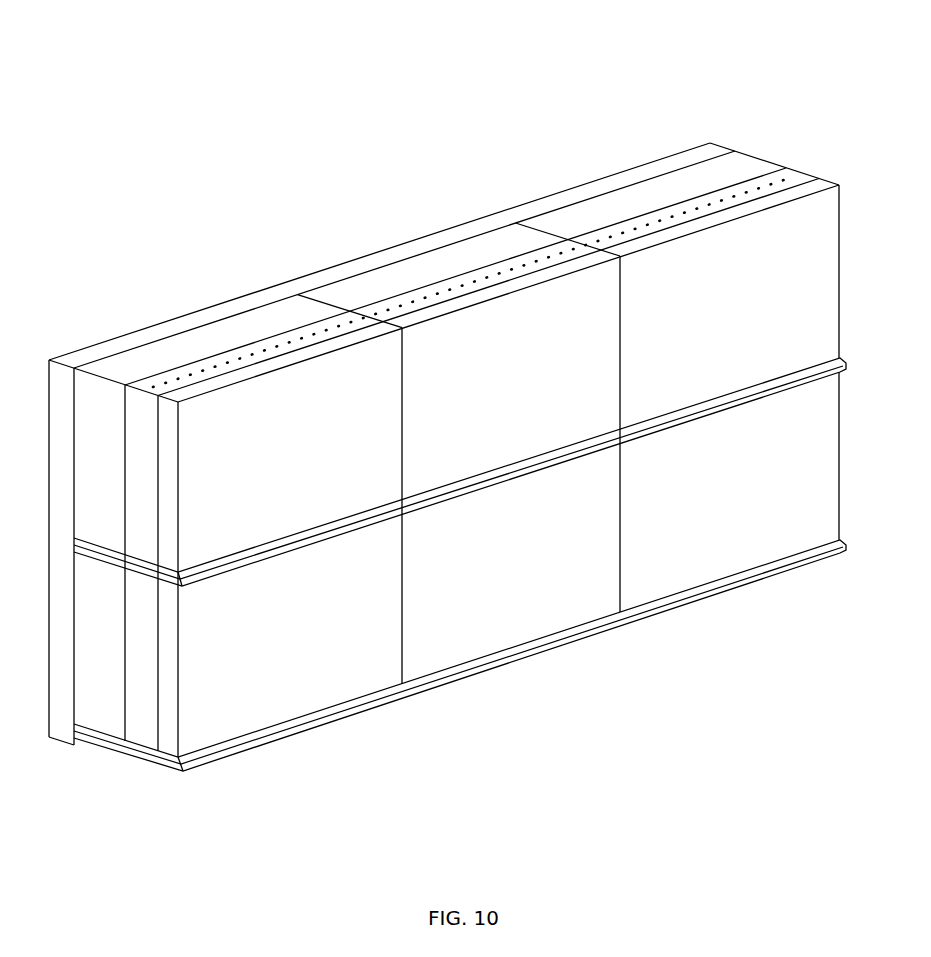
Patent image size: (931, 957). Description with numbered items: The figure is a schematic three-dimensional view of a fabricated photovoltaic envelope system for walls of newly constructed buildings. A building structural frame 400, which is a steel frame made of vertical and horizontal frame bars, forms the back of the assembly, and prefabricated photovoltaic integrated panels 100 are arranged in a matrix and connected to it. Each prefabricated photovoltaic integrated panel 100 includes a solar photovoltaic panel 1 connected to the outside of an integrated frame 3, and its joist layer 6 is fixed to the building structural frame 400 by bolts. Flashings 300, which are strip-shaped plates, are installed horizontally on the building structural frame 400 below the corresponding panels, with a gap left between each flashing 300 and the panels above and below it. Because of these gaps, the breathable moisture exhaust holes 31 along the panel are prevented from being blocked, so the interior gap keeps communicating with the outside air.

The prefabricated photovoltaic integrated panel 100 is at (790, 163).
The building structural frame 400 is at (180, 330).
The joist layer 6 is at (500, 245).
The integrated frame 3 is at (660, 212).
The breathable moisture exhaust hole 31 is at (432, 295).
The solar photovoltaic panel 1 is at (700, 565).
The flashing 300 is at (357, 712).